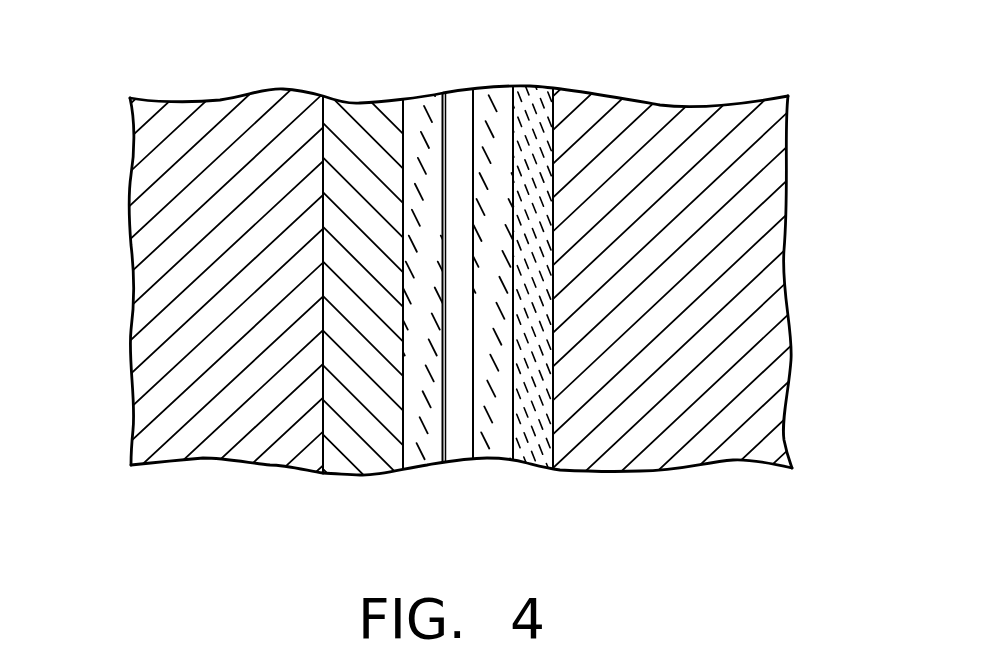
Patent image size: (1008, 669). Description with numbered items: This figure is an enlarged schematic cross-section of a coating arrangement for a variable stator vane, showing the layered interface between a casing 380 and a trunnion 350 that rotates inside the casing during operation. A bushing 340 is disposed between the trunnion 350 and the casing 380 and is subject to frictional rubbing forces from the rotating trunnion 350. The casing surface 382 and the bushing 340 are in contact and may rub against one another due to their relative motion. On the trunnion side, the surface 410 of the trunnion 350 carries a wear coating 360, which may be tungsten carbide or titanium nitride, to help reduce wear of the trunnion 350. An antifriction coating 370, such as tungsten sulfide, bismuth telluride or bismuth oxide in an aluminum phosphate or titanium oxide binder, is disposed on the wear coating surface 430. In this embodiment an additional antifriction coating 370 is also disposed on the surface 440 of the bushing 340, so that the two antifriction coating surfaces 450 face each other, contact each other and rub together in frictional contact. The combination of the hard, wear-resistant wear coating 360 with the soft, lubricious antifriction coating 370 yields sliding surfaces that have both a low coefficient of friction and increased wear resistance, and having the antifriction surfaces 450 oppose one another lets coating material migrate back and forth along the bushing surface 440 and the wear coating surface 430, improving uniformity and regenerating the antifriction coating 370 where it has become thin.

The casing 380 is at (178, 218).
The casing surface 382 is at (300, 406).
The bushing 340 is at (300, 406).
The surface of bushing 440 is at (424, 413).
The antifriction coating 370 is at (427, 430).
The antifriction coating surfaces 450 is at (475, 115).
The wear coating surface 430 is at (512, 396).
The surface of trunnion 410 is at (549, 416).
The wear coating 360 is at (553, 468).
The trunnion 350 is at (763, 218).